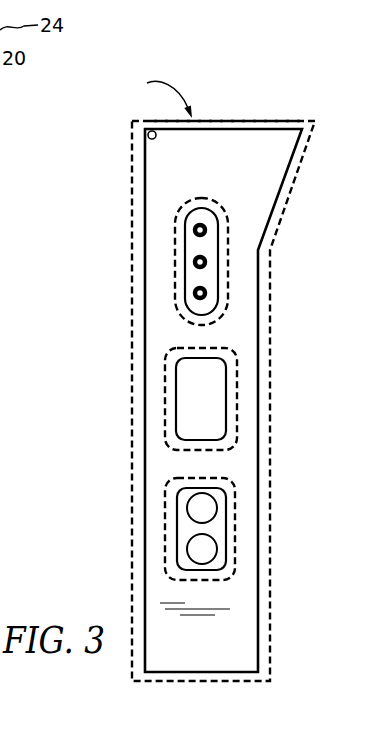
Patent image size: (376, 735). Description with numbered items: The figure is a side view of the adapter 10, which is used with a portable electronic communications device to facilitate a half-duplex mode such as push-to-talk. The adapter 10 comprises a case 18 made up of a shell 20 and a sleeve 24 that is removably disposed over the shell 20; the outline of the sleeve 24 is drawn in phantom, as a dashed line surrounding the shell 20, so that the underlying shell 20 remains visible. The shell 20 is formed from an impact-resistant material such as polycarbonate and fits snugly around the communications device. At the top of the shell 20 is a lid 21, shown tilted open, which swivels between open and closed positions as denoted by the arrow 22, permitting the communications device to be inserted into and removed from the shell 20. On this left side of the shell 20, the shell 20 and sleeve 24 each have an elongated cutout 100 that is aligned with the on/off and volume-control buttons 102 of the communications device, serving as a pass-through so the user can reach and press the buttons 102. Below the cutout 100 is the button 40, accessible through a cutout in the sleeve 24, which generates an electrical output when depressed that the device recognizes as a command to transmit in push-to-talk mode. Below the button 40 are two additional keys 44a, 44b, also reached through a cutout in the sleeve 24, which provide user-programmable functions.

The adapter 10 is at (181, 340).
The case 18 is at (283, 109).
The shell 20 is at (156, 178).
The lid 21 is at (132, 89).
The arrow 22 is at (173, 90).
The sleeve 24 is at (310, 119).
The button 40 is at (192, 392).
The key 44a is at (190, 508).
The key 44b is at (190, 549).
The elongated cutout 100 is at (202, 199).
The on/off and volume-control buttons 102 is at (192, 232).